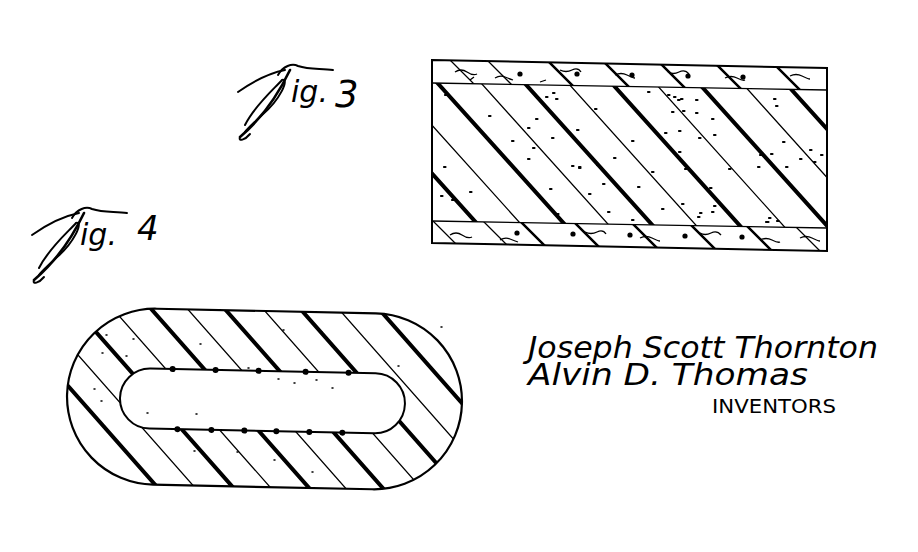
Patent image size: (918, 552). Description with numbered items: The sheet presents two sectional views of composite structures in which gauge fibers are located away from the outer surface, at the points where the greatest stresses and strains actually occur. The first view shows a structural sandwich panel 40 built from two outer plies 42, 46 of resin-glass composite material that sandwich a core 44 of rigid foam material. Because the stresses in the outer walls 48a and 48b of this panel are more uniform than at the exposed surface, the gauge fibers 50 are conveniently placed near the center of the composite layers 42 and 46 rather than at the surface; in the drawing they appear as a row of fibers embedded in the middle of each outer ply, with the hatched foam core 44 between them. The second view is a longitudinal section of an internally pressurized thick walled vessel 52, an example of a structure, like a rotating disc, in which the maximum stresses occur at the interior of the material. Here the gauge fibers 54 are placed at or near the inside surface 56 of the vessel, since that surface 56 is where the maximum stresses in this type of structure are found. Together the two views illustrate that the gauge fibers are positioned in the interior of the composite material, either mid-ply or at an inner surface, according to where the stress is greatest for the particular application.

In FIG. 3, the structural sandwich panel 40 is at (779, 62).
In FIG. 3, the outer ply 42 is at (828, 75).
In FIG. 3, the core 44 is at (828, 168).
In FIG. 3, the outer ply 46 is at (828, 238).
In FIG. 3, the outer wall 48a is at (718, 90).
In FIG. 3, the outer wall 48b is at (716, 250).
In FIG. 3, the gauge fibers 50 is at (577, 72).
In FIG. 4, the thick walled vessel 52 is at (116, 462).
In FIG. 4, the gauge fibers 54 is at (304, 369).
In FIG. 4, the inside surface 56 is at (326, 372).